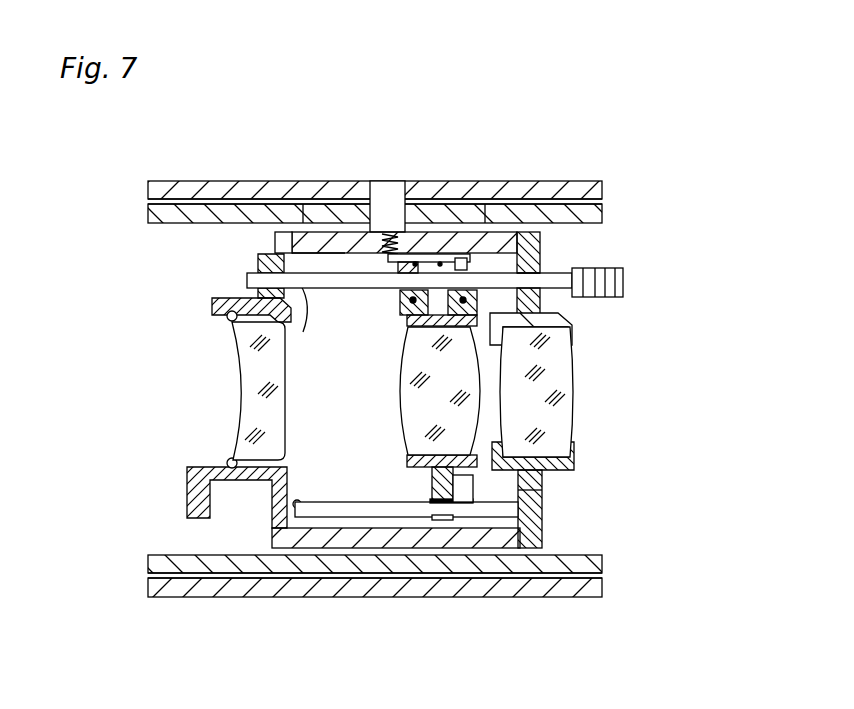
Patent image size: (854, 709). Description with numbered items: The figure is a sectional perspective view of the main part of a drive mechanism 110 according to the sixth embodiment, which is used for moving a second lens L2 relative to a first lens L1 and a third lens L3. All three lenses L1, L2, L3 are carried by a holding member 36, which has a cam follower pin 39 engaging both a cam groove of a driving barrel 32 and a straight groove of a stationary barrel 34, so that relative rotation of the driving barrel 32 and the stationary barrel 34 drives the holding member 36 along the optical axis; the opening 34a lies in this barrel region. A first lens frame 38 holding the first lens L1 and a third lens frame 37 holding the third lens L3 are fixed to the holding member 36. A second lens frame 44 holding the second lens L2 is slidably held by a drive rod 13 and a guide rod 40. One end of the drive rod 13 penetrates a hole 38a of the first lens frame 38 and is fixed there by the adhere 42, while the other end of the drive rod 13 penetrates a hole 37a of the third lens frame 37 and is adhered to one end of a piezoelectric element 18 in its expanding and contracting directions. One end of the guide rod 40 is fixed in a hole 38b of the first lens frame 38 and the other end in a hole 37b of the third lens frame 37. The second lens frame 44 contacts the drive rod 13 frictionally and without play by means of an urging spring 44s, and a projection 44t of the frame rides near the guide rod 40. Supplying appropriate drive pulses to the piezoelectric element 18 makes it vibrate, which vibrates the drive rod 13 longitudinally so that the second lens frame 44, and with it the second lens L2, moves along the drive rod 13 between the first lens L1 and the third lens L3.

The drive rod 13 is at (322, 270).
The piezoelectric element 18 is at (598, 297).
The driving barrel 32 is at (206, 193).
The stationary barrel 34 is at (171, 212).
The casing opening 34a is at (333, 208).
The holding member 36 is at (488, 242).
The third lens frame 37 is at (530, 244).
The hole 37a is at (540, 268).
The hole 37b is at (533, 497).
The first lens frame 38 is at (287, 258).
The hole 38a is at (310, 323).
The hole 38b is at (300, 503).
The cam follower pin 39 is at (378, 182).
The guide rod 40 is at (357, 516).
The adhere 42 is at (262, 265).
The second lens frame 44 is at (437, 256).
The urging spring 44s is at (403, 307).
The projection 44t is at (467, 488).
The drive mechanism 110 is at (668, 181).
The first lens L1 is at (247, 408).
The second lens L2 is at (410, 412).
The third lens L3 is at (563, 410).